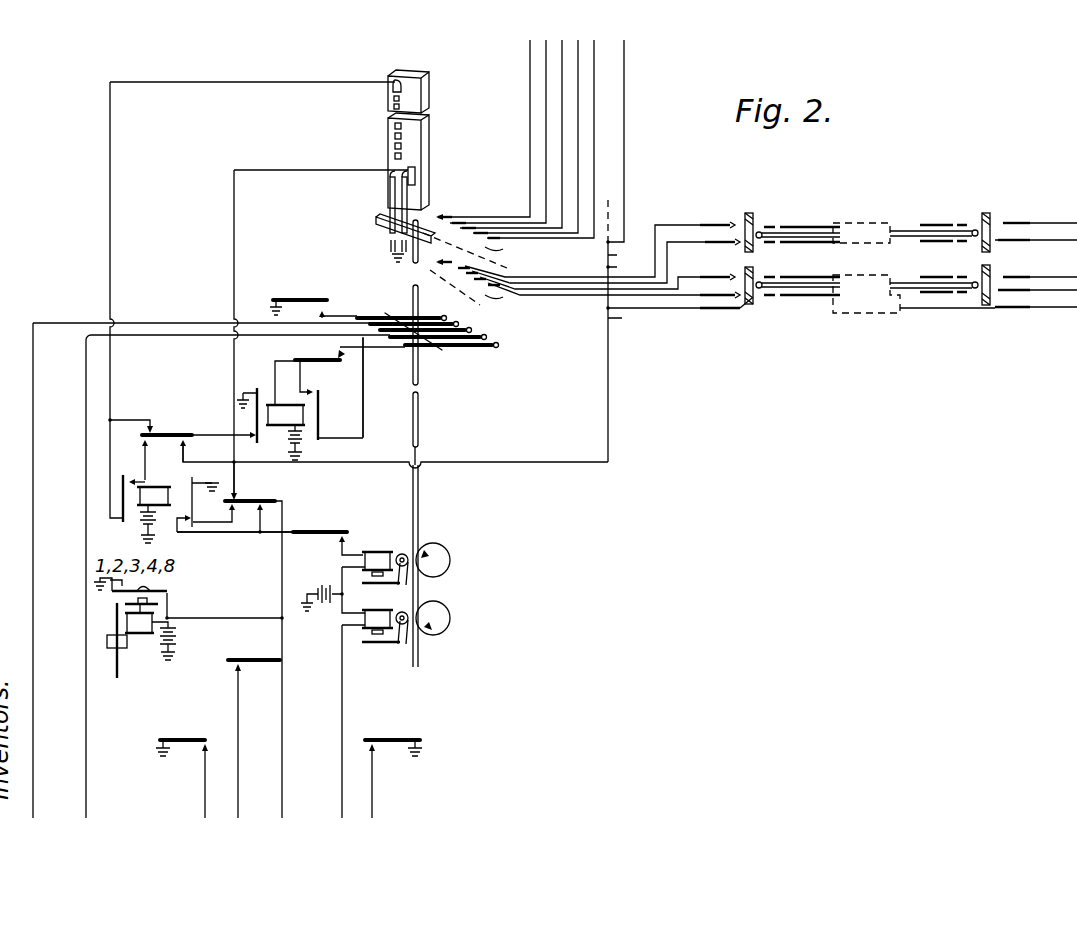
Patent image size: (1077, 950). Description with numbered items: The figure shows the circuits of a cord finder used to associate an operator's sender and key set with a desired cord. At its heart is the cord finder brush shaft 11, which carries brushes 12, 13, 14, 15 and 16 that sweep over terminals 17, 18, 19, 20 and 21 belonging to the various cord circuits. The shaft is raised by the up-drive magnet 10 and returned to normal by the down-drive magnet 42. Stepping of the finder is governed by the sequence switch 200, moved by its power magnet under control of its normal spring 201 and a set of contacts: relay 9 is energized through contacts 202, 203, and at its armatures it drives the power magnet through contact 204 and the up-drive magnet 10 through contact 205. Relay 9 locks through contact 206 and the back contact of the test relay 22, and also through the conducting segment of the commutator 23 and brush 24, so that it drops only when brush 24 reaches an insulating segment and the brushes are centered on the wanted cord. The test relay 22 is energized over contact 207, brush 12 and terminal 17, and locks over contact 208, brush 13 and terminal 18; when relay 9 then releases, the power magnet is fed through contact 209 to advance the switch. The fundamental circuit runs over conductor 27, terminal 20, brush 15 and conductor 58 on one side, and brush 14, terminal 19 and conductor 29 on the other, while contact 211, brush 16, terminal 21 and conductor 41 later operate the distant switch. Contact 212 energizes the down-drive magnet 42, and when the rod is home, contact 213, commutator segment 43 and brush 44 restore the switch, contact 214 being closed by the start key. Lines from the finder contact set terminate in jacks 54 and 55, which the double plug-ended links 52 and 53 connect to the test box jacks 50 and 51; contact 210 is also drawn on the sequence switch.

The relay 9 is at (158, 492).
The up-drive magnet 10 is at (376, 552).
The cord finder brush shaft 11 is at (417, 421).
The brush 12 is at (499, 345).
The brush 13 is at (487, 335).
The finder brush 14 is at (472, 328).
The finder brush 15 is at (468, 317).
The brush 16 is at (447, 312).
The terminal 17 is at (505, 247).
The terminal 18 is at (483, 263).
The terminal 19 is at (467, 257).
The terminal 20 is at (455, 251).
The terminal 21 is at (436, 243).
The test relay 22 is at (278, 408).
The commutator 23 is at (404, 80).
The brush 24 is at (388, 226).
The conductor 27 is at (546, 117).
The conductor 29 is at (562, 147).
The conductor 41 is at (529, 174).
The down-drive magnet 42 is at (378, 634).
The commutator segment 43 is at (416, 176).
The brush 44 is at (408, 203).
The jack 50 is at (995, 211).
The jack 51 is at (985, 306).
The double plug-ended link 52 is at (862, 222).
The double plug-ended link 53 is at (868, 313).
The jack 54 is at (738, 224).
The jack 55 is at (742, 306).
The conductor 58 is at (33, 535).
The sequence switch 200 is at (138, 636).
The normal spring 201 is at (116, 598).
The contact 202 is at (180, 443).
The contact 203 is at (150, 440).
The contact 204 is at (258, 524).
The contact 205 is at (347, 532).
The contact 206 is at (153, 425).
The contact 207 is at (364, 356).
The contact 208 is at (298, 361).
The contact 209 is at (228, 503).
The contact bar 210 is at (214, 731).
The contact 211 is at (345, 292).
The contact 212 is at (378, 741).
The contact 213 is at (236, 490).
The contact 214 is at (242, 666).